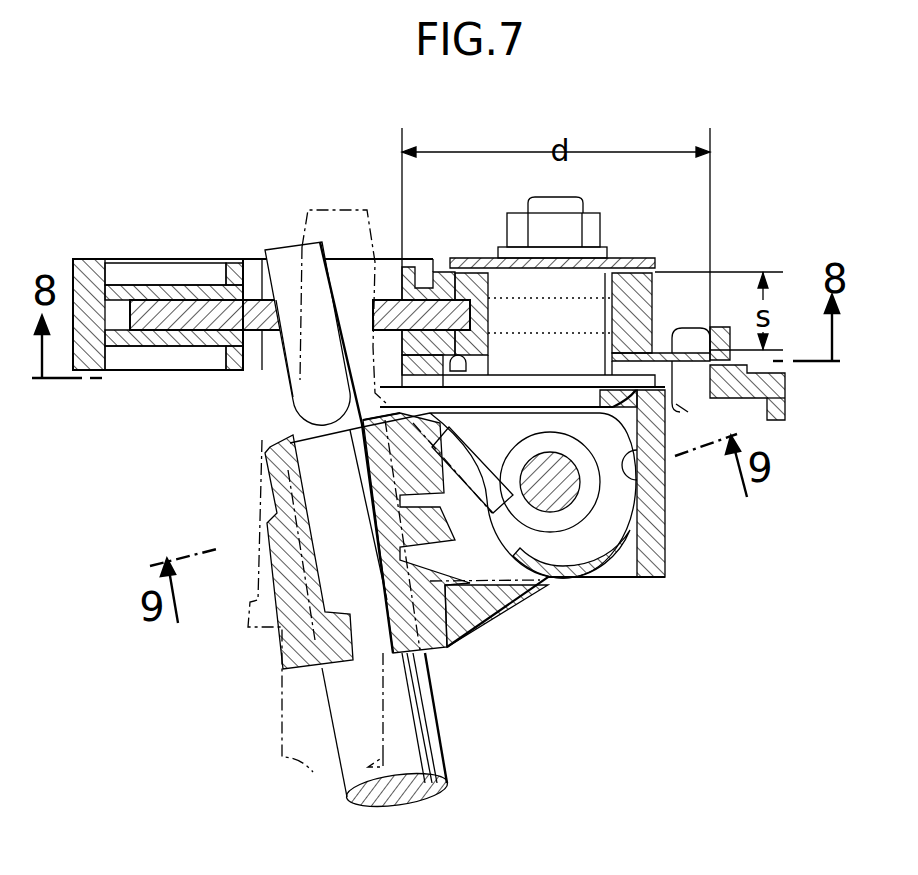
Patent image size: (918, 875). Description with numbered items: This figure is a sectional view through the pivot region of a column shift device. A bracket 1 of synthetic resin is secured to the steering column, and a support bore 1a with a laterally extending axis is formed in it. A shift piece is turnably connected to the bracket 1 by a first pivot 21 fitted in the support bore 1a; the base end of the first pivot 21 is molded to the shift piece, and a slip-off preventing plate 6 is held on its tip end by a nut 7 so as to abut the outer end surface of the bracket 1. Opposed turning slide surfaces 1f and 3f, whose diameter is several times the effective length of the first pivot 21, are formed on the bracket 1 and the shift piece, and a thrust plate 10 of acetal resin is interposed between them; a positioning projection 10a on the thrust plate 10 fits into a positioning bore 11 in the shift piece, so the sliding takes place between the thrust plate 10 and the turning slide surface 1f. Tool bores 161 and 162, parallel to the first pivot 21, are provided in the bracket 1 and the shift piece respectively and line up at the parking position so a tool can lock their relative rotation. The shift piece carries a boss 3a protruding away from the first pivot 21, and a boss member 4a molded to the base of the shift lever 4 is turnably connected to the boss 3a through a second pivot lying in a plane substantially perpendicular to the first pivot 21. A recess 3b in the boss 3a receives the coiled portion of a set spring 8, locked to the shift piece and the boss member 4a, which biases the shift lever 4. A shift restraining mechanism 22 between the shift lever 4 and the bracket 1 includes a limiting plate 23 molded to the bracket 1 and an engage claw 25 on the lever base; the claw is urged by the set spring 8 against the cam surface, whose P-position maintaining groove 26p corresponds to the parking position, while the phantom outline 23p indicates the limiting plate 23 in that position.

The bracket 1 is at (556, 278).
The support bore 1a is at (488, 292).
The turning slide surface 1f is at (653, 333).
The boss 3a is at (666, 533).
The recess 3b is at (666, 488).
The turning slide surface 3f is at (697, 421).
The shift lever 4 is at (400, 742).
The boss member 4a is at (280, 615).
The slip-off preventing plate 6 is at (630, 265).
The nut 7 is at (555, 235).
The set spring 8 is at (597, 533).
The thrust plate 10 is at (660, 328).
The positioning projection 10a is at (300, 440).
The positioning bore 11 is at (449, 430).
The tool bore 161 is at (783, 385).
The tool bore 162 is at (787, 403).
The first pivot 21 is at (561, 333).
The shift restraining mechanism 22 is at (550, 497).
The limiting plate 23 is at (390, 300).
The hub (phantom position) 23p is at (365, 313).
The engage claw 25 is at (296, 250).
The P-position maintaining groove 26p is at (285, 248).